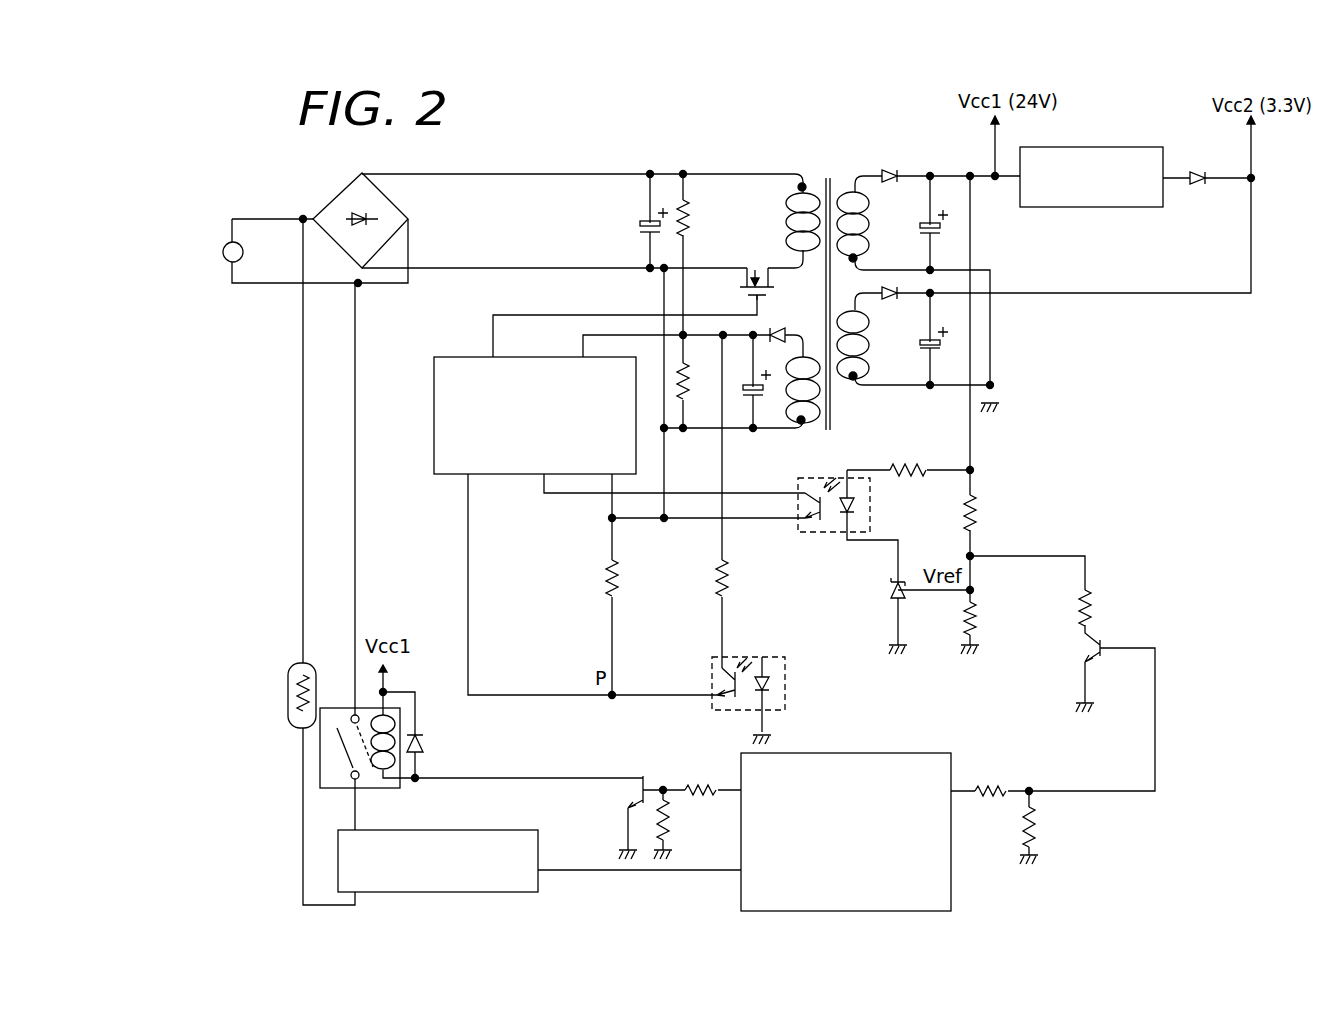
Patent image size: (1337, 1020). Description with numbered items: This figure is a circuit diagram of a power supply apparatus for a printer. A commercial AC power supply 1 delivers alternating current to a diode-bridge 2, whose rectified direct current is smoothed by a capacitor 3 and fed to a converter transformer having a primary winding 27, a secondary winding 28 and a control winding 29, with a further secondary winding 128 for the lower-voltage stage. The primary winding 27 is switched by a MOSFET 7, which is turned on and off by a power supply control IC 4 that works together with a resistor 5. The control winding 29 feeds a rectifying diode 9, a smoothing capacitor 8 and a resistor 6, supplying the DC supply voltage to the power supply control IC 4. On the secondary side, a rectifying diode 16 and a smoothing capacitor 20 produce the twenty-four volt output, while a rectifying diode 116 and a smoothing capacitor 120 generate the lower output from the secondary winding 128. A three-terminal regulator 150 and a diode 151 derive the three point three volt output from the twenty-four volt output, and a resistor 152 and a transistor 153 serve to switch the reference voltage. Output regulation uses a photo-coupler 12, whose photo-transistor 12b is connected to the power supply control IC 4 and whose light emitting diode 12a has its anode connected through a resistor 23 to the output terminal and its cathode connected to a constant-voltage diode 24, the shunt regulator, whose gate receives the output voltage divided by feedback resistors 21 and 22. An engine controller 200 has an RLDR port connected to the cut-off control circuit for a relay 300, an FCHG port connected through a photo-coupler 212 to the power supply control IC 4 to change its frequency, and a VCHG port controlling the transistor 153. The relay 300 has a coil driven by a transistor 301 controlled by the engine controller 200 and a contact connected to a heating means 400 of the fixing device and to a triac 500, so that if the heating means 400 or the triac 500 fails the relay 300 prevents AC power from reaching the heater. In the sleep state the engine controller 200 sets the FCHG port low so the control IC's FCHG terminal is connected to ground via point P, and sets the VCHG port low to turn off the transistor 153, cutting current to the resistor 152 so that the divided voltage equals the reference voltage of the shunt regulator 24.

The commercial AC power supply 1 is at (226, 247).
The diode-bridge 2 is at (330, 192).
The capacitor 3 is at (640, 228).
The power supply control IC 4 is at (460, 356).
The resistor 5 is at (690, 218).
The resistor 6 is at (690, 382).
The MOSFET 7 is at (778, 291).
The smoothing capacitor 8 is at (740, 386).
The rectifying diode 9 is at (788, 333).
The photo-coupler 12 is at (832, 519).
The light emitting diode of photocoupler 12a is at (852, 508).
The phototransistor of photocoupler 12b is at (812, 500).
The rectifying diode 16 is at (889, 168).
The smoothing capacitor 20 is at (920, 228).
The resistor 21 is at (962, 512).
The resistor 22 is at (980, 620).
The resistor 23 is at (908, 462).
The constant-voltage diode 24 is at (888, 596).
The primary winding 27 is at (788, 241).
The secondary winding 28 is at (868, 236).
The control winding 29 is at (790, 425).
The rectifying diode 116 is at (898, 292).
The smoothing capacitor 120 is at (920, 343).
The secondary winding 128 is at (868, 352).
The three-terminal regulator 150 is at (1132, 146).
The diode 151 is at (1196, 171).
The resistor 152 is at (1090, 616).
The transistor 153 is at (1086, 650).
The engine controller 200 is at (934, 753).
The photo-coupler 212 is at (726, 713).
The relay 300 is at (380, 790).
The transistor 301 is at (636, 778).
The heating means 400 is at (316, 664).
The triac 500 is at (510, 830).